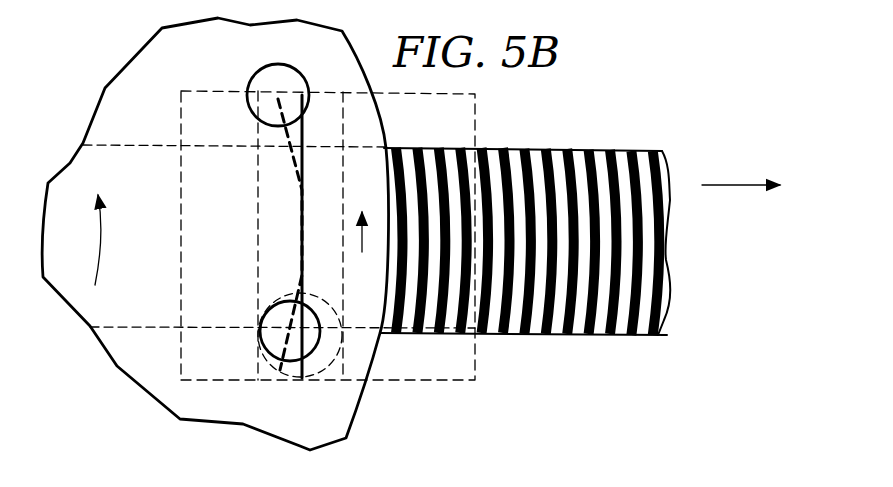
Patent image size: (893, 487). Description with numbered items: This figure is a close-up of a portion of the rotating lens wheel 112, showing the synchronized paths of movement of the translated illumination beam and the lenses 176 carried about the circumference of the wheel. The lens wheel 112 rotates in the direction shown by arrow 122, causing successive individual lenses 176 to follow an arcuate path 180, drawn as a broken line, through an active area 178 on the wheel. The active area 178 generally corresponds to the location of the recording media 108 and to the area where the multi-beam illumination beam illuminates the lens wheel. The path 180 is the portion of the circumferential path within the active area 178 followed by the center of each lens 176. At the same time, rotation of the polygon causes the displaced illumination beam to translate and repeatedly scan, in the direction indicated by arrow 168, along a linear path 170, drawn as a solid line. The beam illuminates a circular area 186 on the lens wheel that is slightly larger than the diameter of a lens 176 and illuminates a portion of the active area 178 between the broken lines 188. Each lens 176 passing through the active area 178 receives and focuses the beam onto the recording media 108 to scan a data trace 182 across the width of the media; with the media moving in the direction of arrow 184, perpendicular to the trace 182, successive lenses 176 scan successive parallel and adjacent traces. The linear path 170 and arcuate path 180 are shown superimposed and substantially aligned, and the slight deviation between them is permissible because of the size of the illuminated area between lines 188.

The recording media 108 is at (603, 148).
The lens wheel 112 is at (362, 407).
The arrow 122 is at (102, 240).
The arrow 168 is at (365, 238).
The linear path 170 is at (290, 372).
The lenses 176 is at (292, 78).
The active area 178 is at (475, 128).
The arcuate path 180 is at (297, 157).
The data trace 182 is at (557, 328).
The arrow 184 is at (740, 185).
The circular area 186 is at (330, 372).
The broken lines 188 is at (258, 232).